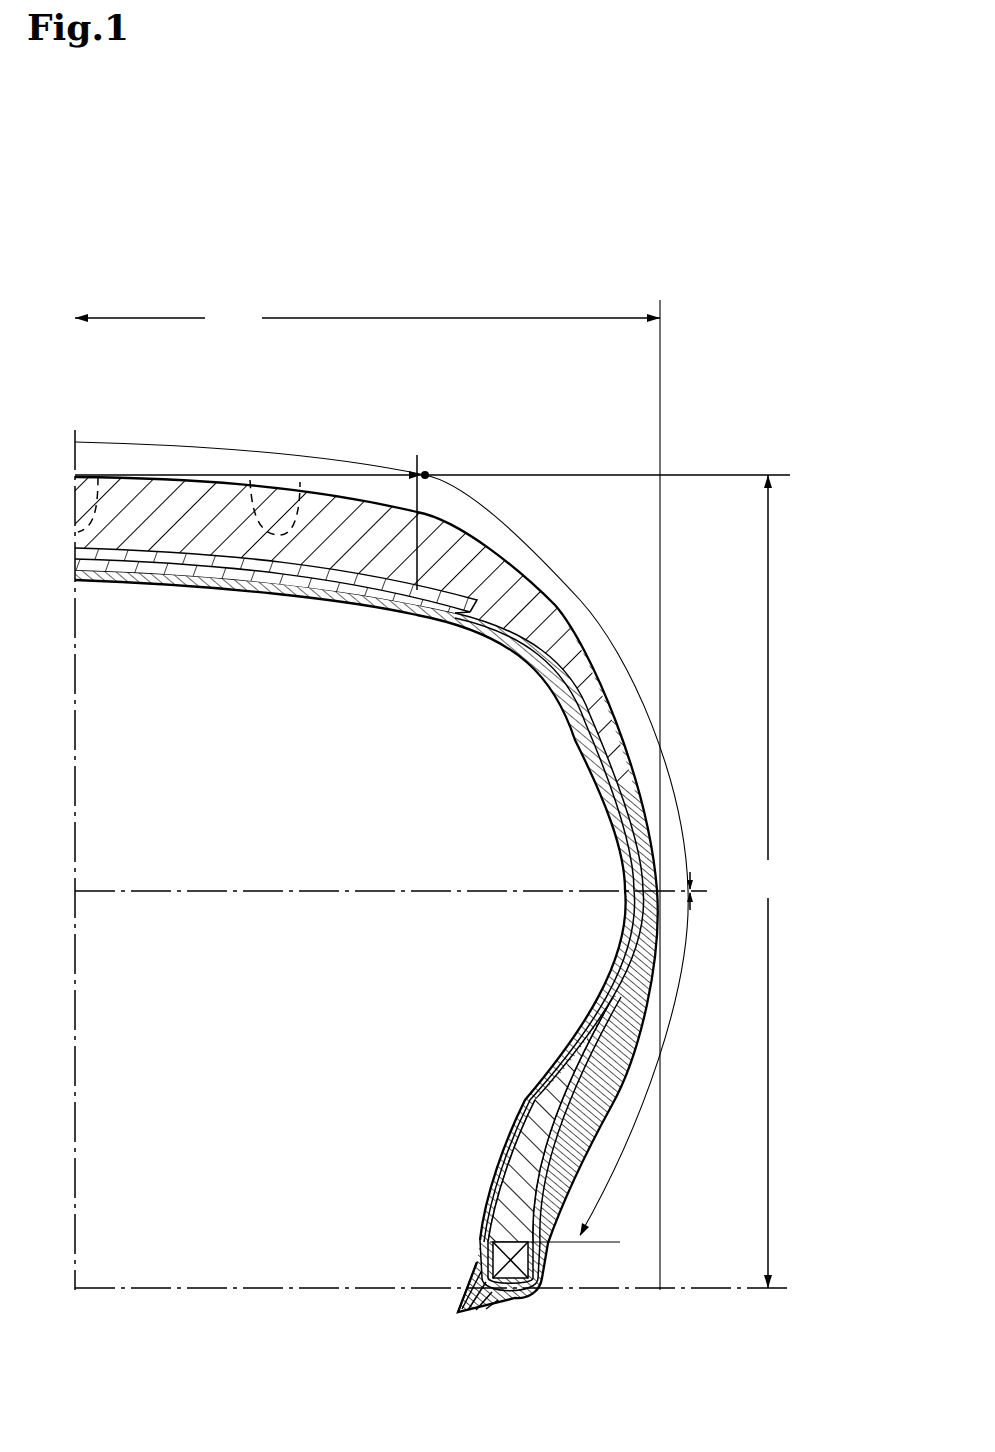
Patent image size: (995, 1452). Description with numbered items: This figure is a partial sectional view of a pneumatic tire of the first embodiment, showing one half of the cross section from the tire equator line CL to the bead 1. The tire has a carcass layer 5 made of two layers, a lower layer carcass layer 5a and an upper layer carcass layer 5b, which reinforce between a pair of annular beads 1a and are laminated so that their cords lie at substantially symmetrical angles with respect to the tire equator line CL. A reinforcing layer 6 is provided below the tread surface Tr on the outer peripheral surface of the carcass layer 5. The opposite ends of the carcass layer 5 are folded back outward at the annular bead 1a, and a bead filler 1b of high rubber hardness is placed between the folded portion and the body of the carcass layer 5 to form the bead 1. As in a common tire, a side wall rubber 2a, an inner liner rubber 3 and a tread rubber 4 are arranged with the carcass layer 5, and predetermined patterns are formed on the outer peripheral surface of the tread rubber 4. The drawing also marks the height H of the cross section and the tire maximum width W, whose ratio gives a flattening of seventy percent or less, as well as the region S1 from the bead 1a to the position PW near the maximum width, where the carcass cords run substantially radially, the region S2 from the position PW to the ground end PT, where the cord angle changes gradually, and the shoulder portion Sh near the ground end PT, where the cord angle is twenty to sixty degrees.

The bead 1 is at (502, 1304).
The annular bead 1a is at (506, 1280).
The bead filler 1b is at (520, 1200).
The side wall rubber 2a is at (605, 1120).
The inner liner rubber 3 is at (577, 745).
The tread rubber 4 is at (215, 476).
The carcass layer 5 is at (281, 653).
The lower layer carcass layer 5a is at (482, 628).
The upper layer carcass layer 5b is at (487, 712).
The reinforcing layer 6 is at (437, 518).
The shoulder portion Sh is at (485, 586).
The tread surface Tr is at (298, 439).
The ground end PT is at (413, 506).
The tire equator line CL is at (70, 842).
The region from bead to maximum width position S1 is at (641, 1063).
The region from maximum width position to ground end S2 is at (381, 666).
The tire maximum width W is at (367, 321).
The height of cross section H is at (769, 881).
The position near tire maximum width PW is at (719, 901).